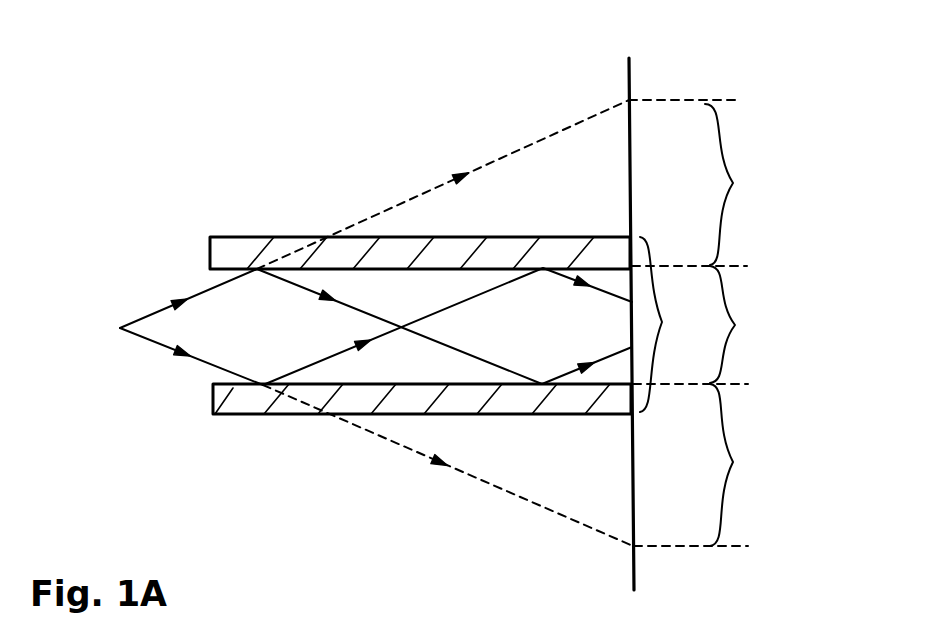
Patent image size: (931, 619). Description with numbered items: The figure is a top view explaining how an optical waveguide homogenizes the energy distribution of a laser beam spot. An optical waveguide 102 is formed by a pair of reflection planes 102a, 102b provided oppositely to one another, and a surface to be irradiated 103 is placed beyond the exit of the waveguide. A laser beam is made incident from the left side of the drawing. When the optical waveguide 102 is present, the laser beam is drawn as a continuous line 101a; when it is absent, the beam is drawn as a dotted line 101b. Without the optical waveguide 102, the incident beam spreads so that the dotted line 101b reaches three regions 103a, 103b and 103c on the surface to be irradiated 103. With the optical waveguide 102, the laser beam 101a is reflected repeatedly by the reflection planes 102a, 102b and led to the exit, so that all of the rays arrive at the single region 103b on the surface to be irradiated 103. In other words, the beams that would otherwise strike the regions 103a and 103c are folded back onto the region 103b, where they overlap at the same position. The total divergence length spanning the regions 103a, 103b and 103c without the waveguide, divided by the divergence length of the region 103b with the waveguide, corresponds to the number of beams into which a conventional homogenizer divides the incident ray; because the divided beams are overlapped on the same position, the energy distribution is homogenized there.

The laser beam (with optical waveguide) 101a is at (376, 415).
The laser beam (without optical waveguide) 101b is at (445, 319).
The optical waveguide 102 is at (672, 324).
The reflection plane 102a is at (400, 210).
The reflection plane 102b is at (379, 435).
The surface to be irradiated 103 is at (683, 298).
The region of surface to be irradiated 103a is at (717, 182).
The region of surface to be irradiated 103b is at (719, 324).
The region of surface to be irradiated 103c is at (720, 465).